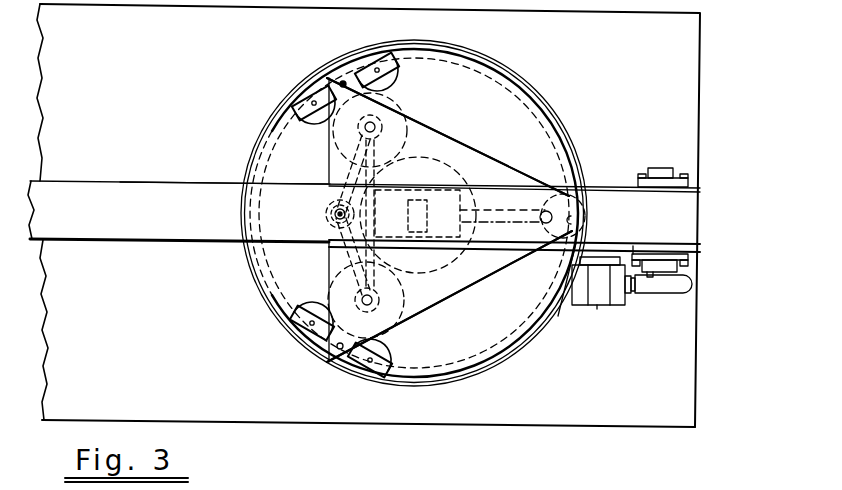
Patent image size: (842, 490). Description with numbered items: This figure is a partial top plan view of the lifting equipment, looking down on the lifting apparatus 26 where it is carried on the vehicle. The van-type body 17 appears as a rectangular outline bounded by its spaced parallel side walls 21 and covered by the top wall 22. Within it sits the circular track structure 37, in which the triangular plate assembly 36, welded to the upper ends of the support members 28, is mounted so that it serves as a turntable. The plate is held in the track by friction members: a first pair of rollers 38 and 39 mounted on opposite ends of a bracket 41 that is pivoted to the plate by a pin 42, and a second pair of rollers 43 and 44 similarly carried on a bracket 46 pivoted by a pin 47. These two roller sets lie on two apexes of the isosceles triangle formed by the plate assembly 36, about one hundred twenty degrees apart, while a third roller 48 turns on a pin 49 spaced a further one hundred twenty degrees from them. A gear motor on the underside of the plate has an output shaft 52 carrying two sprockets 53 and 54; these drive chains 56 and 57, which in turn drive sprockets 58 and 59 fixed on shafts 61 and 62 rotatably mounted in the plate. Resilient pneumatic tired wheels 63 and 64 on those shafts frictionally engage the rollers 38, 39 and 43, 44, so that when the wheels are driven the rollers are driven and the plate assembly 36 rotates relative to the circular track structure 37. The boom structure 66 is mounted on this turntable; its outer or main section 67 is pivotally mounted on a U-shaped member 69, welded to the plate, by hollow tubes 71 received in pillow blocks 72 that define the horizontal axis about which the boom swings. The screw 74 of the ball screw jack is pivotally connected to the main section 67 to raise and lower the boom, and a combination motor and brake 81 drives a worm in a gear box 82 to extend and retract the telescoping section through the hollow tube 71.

The body 17 is at (298, 423).
The side walls 21 is at (700, 14).
The top wall 22 is at (605, 363).
The lifting apparatus 26 is at (262, 333).
The support members 28 is at (405, 271).
The triangular plate assembly 36 is at (470, 138).
The circular track structure 37 is at (563, 118).
The roller 38 is at (303, 116).
The roller 39 is at (398, 70).
The bracket 41 is at (366, 66).
The pin 42 is at (343, 80).
The roller 43 is at (388, 362).
The roller 44 is at (305, 307).
The bracket 46 is at (318, 333).
The pin 47 is at (339, 350).
The roller 48 is at (588, 167).
The pin 49 is at (578, 216).
The output shaft 52 is at (337, 218).
The sprocket 53 is at (340, 203).
The sprocket 54 is at (340, 214).
The chain 56 is at (327, 161).
The chain 57 is at (330, 267).
The sprocket 58 is at (402, 147).
The sprocket 59 is at (340, 283).
The shaft 61 is at (380, 123).
The shaft 62 is at (366, 300).
The resilient wheel 63 is at (430, 118).
The resilient wheel 64 is at (420, 322).
The boom structure 66 is at (187, 180).
The outer section 67 is at (120, 222).
The U-shaped member 69 is at (658, 188).
The hollow tubes 71 is at (665, 170).
The pillow blocks 72 is at (682, 177).
The screw 74 is at (428, 228).
The combination motor and brake 81 is at (598, 309).
The gear box 82 is at (672, 287).